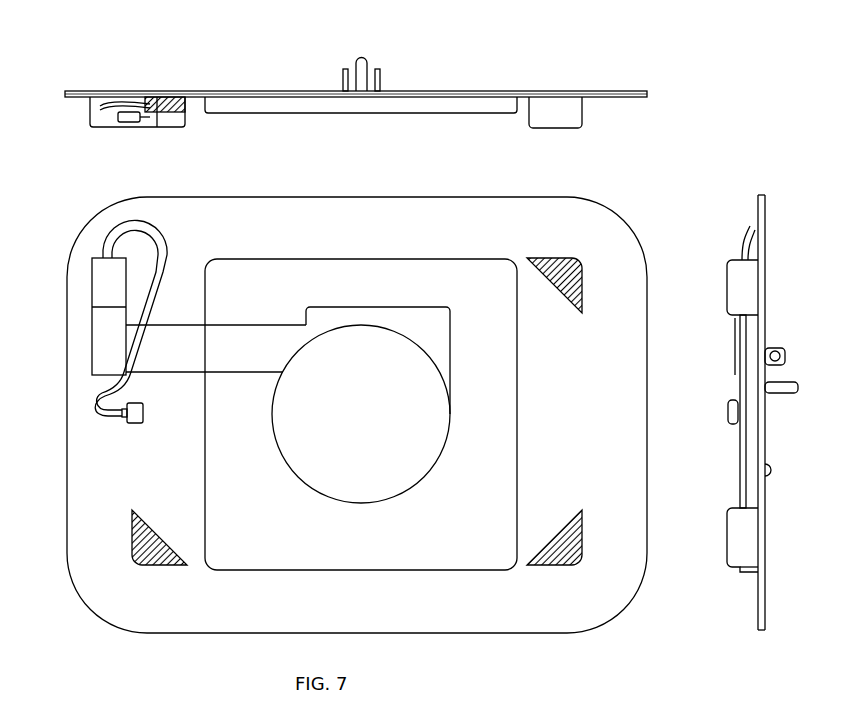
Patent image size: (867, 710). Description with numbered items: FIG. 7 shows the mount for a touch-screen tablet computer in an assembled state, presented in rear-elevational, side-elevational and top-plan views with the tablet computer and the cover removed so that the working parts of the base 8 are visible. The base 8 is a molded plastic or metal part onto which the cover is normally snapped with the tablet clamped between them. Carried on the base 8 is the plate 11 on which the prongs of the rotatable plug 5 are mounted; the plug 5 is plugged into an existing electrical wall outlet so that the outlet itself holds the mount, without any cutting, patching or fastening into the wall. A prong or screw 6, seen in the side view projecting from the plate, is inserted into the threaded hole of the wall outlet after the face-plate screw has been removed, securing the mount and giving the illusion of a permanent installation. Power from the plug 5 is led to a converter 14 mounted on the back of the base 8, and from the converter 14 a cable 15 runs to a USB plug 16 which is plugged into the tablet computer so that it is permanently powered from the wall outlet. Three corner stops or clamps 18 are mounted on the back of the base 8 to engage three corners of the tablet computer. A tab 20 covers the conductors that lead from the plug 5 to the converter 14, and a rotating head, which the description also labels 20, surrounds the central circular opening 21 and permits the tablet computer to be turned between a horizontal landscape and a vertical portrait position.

The rotatable plug 5 is at (372, 66).
The prong or screw 6 is at (773, 468).
The base 8 is at (613, 91).
The plate 11 is at (388, 106).
The converter 14 is at (91, 111).
The cable 15 is at (168, 248).
The USB plug 16 is at (142, 423).
The corner stops or clamps 18 is at (570, 268).
The tab 20 is at (292, 322).
The circular opening 21 is at (430, 466).